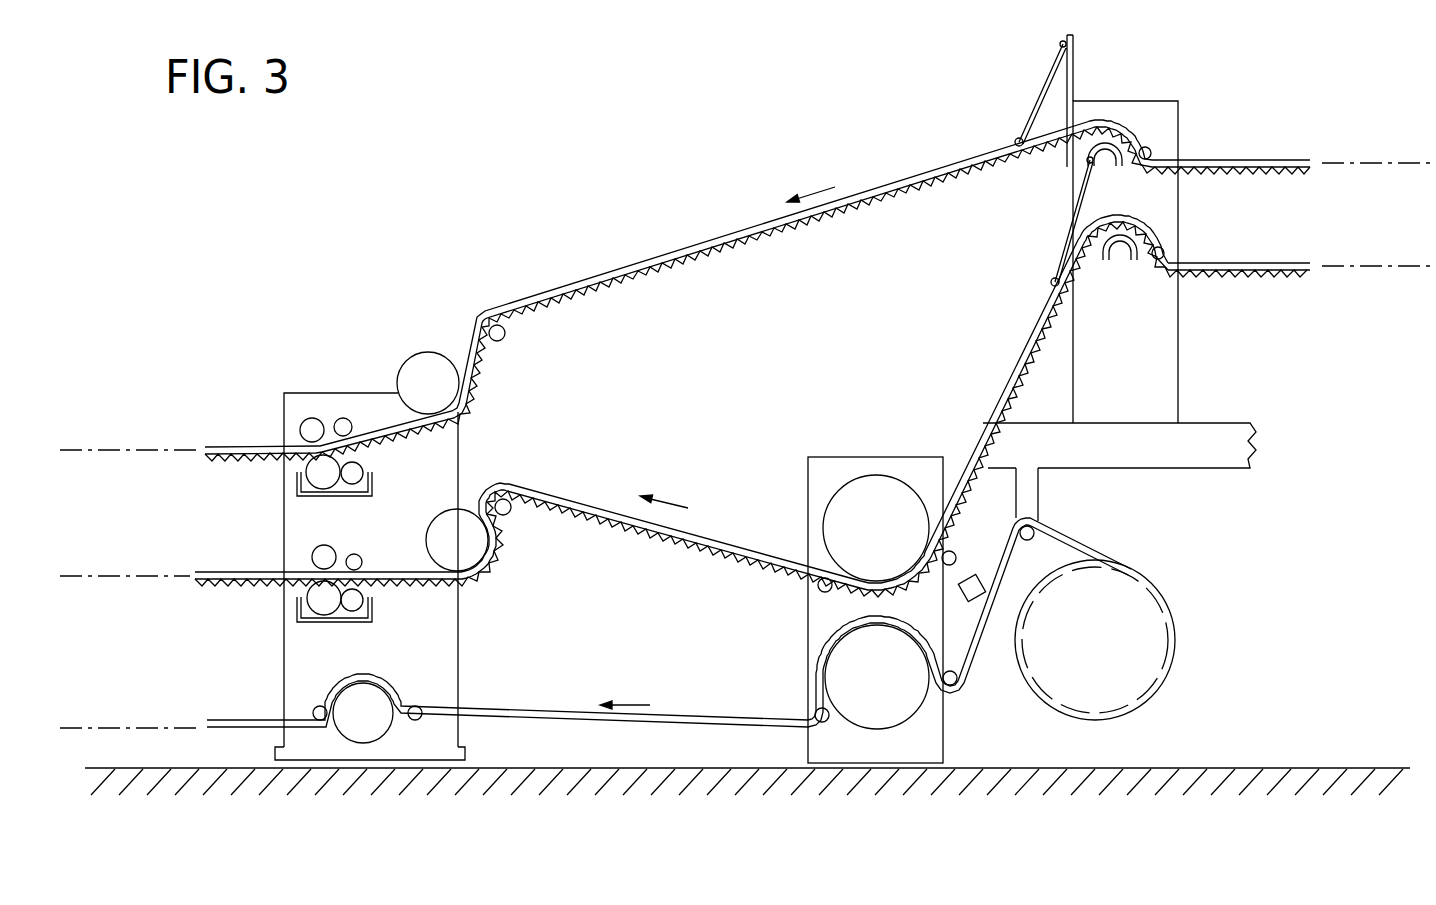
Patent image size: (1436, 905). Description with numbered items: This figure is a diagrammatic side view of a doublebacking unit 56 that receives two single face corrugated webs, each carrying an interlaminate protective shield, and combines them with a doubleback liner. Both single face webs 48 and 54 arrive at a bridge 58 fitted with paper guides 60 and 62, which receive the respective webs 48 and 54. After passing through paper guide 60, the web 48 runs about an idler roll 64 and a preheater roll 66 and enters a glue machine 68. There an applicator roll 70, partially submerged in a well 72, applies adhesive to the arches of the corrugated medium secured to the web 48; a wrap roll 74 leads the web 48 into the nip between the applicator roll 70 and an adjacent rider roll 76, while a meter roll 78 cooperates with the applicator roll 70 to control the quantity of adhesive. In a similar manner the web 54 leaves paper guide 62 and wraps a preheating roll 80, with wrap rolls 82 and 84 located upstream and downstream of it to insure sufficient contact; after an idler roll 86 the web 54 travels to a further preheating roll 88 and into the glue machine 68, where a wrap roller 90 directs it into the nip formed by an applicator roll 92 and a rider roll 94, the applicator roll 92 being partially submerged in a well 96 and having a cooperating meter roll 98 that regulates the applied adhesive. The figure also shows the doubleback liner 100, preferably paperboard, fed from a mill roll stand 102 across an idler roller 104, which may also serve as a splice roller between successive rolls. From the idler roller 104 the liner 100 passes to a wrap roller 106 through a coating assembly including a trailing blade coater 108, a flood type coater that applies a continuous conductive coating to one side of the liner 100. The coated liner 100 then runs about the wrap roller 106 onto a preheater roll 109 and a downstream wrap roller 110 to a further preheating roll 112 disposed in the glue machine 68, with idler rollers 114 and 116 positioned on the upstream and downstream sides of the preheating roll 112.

The single face web 48 is at (1276, 160).
The single face web 54 is at (1280, 263).
The doublebacking unit 56 is at (632, 232).
The bridge 58 is at (1091, 206).
The paper guide 60 is at (1131, 131).
The paper guide 62 is at (1134, 221).
The idler roll 64 is at (506, 334).
The preheater roll 66 is at (425, 384).
The glue machine 68 is at (406, 653).
The applicator roll 70 is at (316, 469).
The well 72 is at (366, 487).
The wrap roll 74 is at (343, 426).
The rider roll 76 is at (306, 426).
The meter roll 78 is at (357, 470).
The preheating roll 80 is at (861, 541).
The wrap roll 82 is at (954, 556).
The wrap roll 84 is at (818, 584).
The idler roll 86 is at (509, 512).
The preheating roll 88 is at (441, 553).
The wrap roller 90 is at (356, 560).
The applicator roll 92 is at (324, 608).
The rider roll 94 is at (324, 555).
The well 96 is at (353, 614).
The meter roll 98 is at (354, 598).
The doubleback liner 100 is at (1070, 543).
The mill roll stand 102 is at (1075, 650).
The idler roller 104 is at (1027, 540).
The wrap roller 106 is at (955, 687).
The trailing blade coater 108 is at (971, 593).
The preheater roll 109 is at (857, 690).
The wrap roller 110 is at (816, 712).
The preheating roll 112 is at (345, 726).
The idler roller 114 is at (416, 708).
The idler roller 116 is at (321, 708).